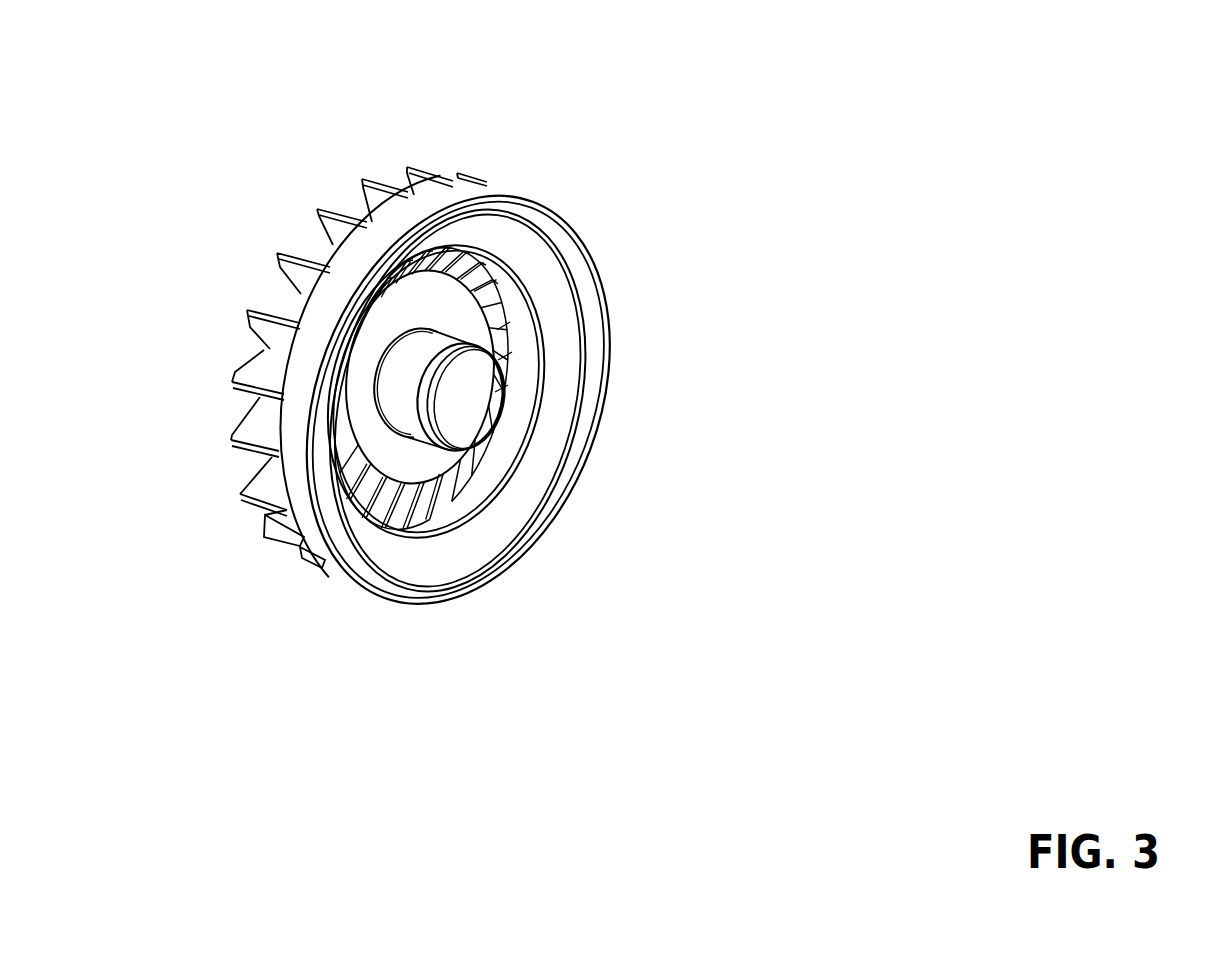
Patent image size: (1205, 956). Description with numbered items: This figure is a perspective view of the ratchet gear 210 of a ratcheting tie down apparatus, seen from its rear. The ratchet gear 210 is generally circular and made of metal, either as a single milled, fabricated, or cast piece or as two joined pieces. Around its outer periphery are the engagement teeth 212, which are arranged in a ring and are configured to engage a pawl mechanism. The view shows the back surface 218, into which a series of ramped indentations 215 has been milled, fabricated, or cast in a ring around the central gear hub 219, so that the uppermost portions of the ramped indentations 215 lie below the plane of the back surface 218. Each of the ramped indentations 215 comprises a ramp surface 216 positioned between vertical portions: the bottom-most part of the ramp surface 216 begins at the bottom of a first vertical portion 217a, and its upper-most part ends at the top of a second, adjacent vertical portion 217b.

The ratchet gear 210 is at (272, 139).
The engagement teeth 212 is at (375, 175).
The ramped indentations 215 is at (447, 483).
The ramp surfaces 216 is at (503, 303).
The first vertical portion 217a is at (515, 327).
The second vertical portion 217b is at (500, 280).
The back surface 218 is at (374, 550).
The gear hub 219 is at (476, 392).